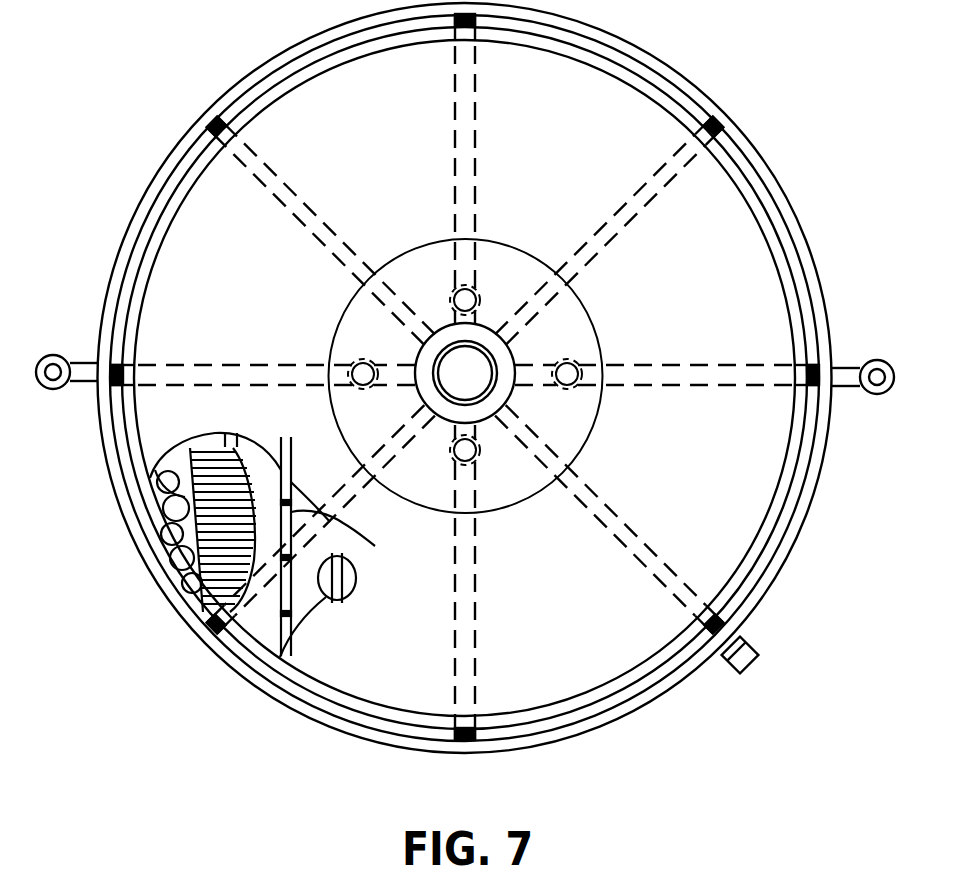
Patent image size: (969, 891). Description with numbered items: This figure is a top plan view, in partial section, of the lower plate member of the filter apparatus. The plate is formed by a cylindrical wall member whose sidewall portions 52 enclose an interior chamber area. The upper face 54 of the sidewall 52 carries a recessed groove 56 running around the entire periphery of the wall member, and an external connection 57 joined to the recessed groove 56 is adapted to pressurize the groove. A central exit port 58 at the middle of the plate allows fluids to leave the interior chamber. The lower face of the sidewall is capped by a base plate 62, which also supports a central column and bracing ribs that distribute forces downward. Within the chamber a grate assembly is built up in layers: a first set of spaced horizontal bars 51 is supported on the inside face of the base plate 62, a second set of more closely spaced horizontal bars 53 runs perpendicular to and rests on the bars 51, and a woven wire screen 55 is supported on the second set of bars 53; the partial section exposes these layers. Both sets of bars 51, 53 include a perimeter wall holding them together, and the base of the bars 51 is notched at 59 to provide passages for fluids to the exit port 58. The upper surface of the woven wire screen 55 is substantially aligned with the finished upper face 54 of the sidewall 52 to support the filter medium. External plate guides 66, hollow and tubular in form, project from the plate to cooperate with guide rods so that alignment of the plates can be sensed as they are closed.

The first set of spaced horizontal bars 51 is at (338, 530).
The sidewall portions 52 is at (600, 722).
The second set of more closely spaced horizontal bars 53 is at (210, 613).
The upper face 54 is at (547, 730).
The woven wire screen 55 is at (190, 525).
The recessed groove 56 is at (350, 710).
The external connection 57 is at (745, 638).
The central exit port 58 is at (453, 386).
The notches 59 is at (291, 557).
The base plate 62 is at (433, 748).
The external plate guides 66 is at (55, 354).